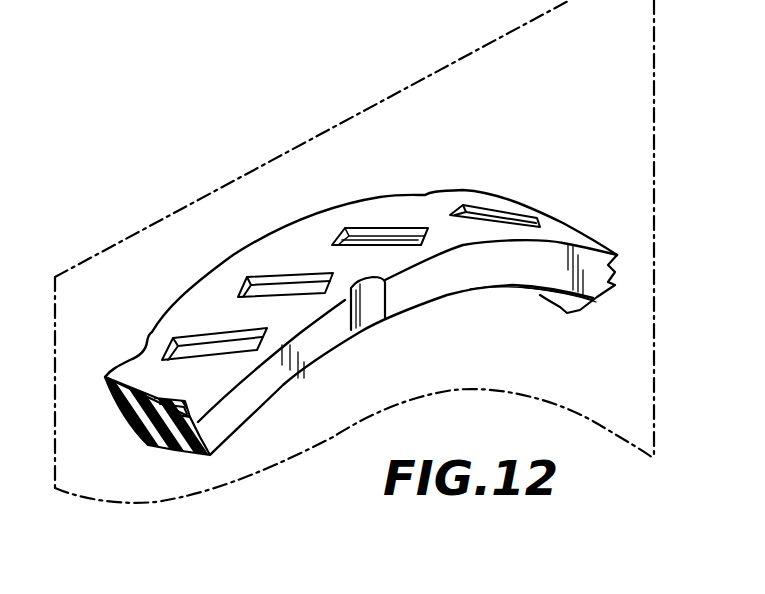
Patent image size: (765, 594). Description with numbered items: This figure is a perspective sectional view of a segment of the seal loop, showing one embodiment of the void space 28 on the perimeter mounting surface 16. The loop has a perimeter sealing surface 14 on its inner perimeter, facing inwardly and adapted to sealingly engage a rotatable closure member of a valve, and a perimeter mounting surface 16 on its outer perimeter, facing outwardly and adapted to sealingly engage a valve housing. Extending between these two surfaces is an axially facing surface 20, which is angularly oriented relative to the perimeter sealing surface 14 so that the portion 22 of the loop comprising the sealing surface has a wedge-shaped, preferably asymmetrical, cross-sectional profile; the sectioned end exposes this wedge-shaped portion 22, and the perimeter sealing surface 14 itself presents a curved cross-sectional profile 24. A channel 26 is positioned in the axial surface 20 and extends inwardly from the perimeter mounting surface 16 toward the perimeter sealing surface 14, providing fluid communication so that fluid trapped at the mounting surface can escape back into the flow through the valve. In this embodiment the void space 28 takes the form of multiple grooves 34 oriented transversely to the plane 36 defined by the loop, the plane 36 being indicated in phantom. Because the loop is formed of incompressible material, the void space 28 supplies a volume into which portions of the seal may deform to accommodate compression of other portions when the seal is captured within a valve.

The perimeter sealing surface 14 is at (542, 297).
The perimeter mounting surface 16 is at (453, 198).
The axially facing surface 20 is at (423, 287).
The wedge-shaped portion 22 is at (152, 447).
The curved cross sectional profile 24 is at (147, 445).
The channel 26 is at (368, 310).
The void space 28 is at (352, 224).
The multiple grooves 34 is at (383, 233).
The plane 36 is at (625, 58).